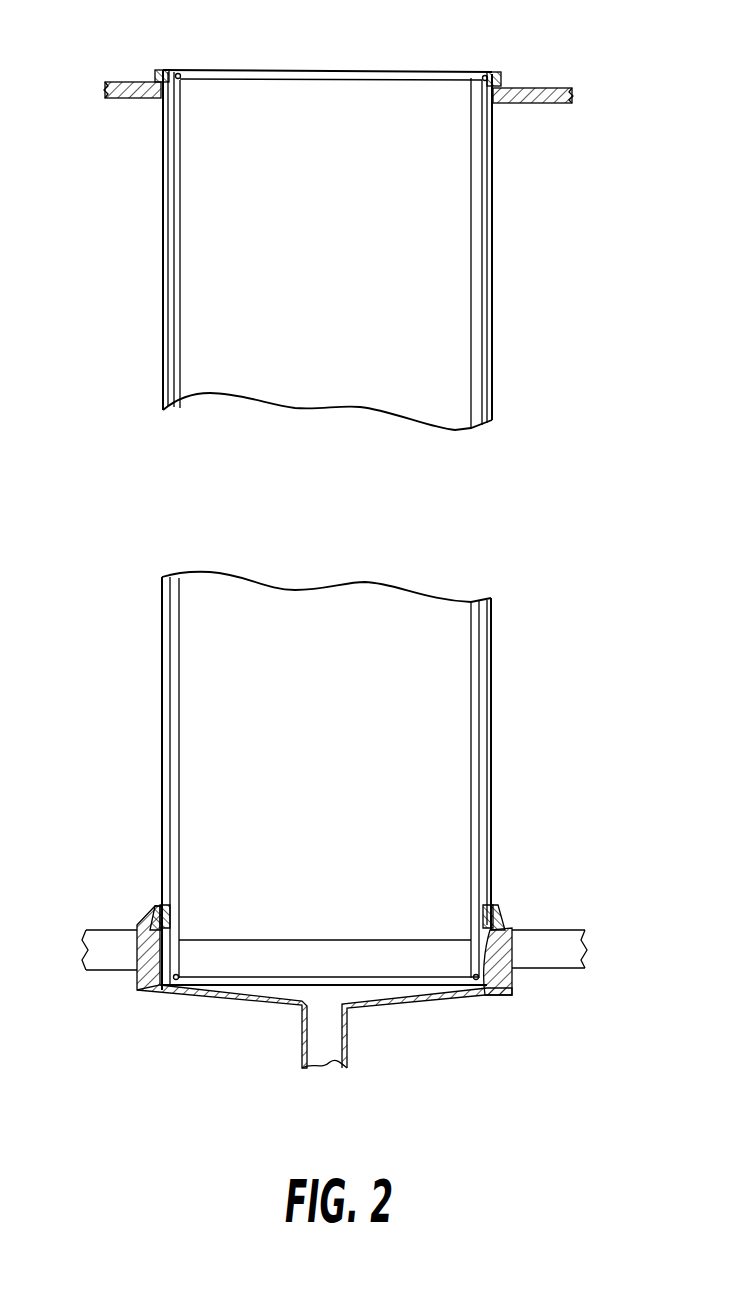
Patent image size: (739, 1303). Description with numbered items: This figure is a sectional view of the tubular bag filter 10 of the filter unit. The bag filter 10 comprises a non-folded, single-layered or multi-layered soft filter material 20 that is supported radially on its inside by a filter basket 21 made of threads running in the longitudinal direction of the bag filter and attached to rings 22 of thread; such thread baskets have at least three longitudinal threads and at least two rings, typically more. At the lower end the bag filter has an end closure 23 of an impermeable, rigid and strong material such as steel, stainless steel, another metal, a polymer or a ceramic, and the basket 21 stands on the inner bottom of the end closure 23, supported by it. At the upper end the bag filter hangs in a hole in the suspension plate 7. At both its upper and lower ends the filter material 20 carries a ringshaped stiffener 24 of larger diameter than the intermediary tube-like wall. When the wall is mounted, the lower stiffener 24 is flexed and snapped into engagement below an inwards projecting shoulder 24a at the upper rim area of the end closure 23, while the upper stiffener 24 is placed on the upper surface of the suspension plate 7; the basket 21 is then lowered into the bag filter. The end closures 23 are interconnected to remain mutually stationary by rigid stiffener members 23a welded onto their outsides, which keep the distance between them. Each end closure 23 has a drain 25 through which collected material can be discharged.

The suspension plate 7 is at (531, 90).
The bag filter 10 is at (435, 314).
The filter material 20 is at (491, 632).
The filter basket 21 is at (178, 357).
The rings of thread 22 is at (271, 79).
The end closure 23 is at (146, 987).
The stiffener member 23a is at (110, 936).
The ringshaped stiffener 24 is at (163, 70).
The inwards projecting shoulder 24a is at (496, 922).
The drain 25 is at (330, 1050).